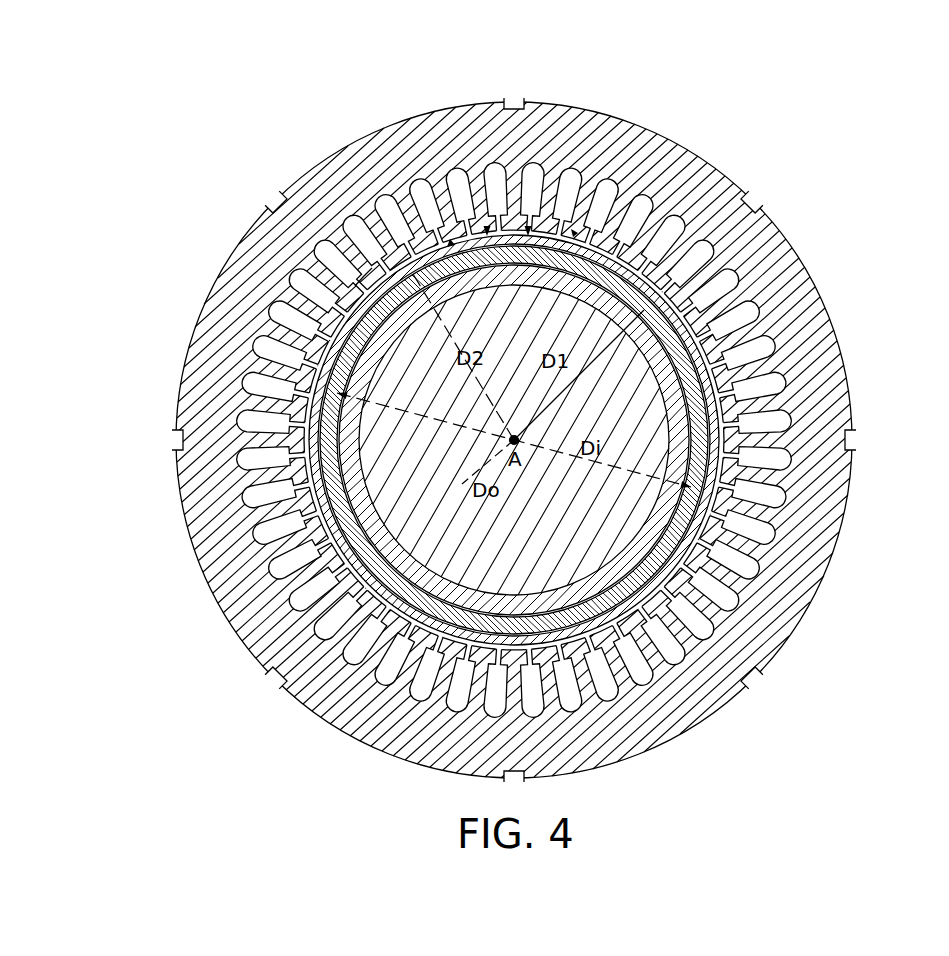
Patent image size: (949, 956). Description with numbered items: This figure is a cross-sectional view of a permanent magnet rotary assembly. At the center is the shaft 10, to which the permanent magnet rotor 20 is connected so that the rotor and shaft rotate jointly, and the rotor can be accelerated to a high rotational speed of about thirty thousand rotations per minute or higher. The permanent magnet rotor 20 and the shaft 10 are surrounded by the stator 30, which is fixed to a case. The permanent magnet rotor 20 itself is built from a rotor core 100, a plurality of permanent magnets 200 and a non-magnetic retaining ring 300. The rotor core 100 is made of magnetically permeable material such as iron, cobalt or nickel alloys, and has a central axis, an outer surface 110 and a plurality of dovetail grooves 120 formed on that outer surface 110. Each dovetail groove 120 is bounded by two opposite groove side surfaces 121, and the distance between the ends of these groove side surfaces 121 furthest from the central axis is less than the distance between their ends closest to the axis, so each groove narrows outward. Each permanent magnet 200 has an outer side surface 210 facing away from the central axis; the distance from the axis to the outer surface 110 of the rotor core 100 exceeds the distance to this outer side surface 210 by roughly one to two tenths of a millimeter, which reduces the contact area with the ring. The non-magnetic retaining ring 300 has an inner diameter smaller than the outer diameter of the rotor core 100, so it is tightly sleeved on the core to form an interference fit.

The shaft 10 is at (637, 410).
The permanent magnet rotor 20 is at (393, 353).
The stator 30 is at (778, 262).
The rotor core 100 is at (318, 476).
The outer surface 110 is at (355, 286).
The dovetail groove 120 is at (487, 232).
The groove side surface 121 is at (447, 247).
The permanent magnet 200 is at (330, 428).
The outer side surface 210 is at (528, 232).
The non-magnetic retaining ring 300 is at (340, 352).